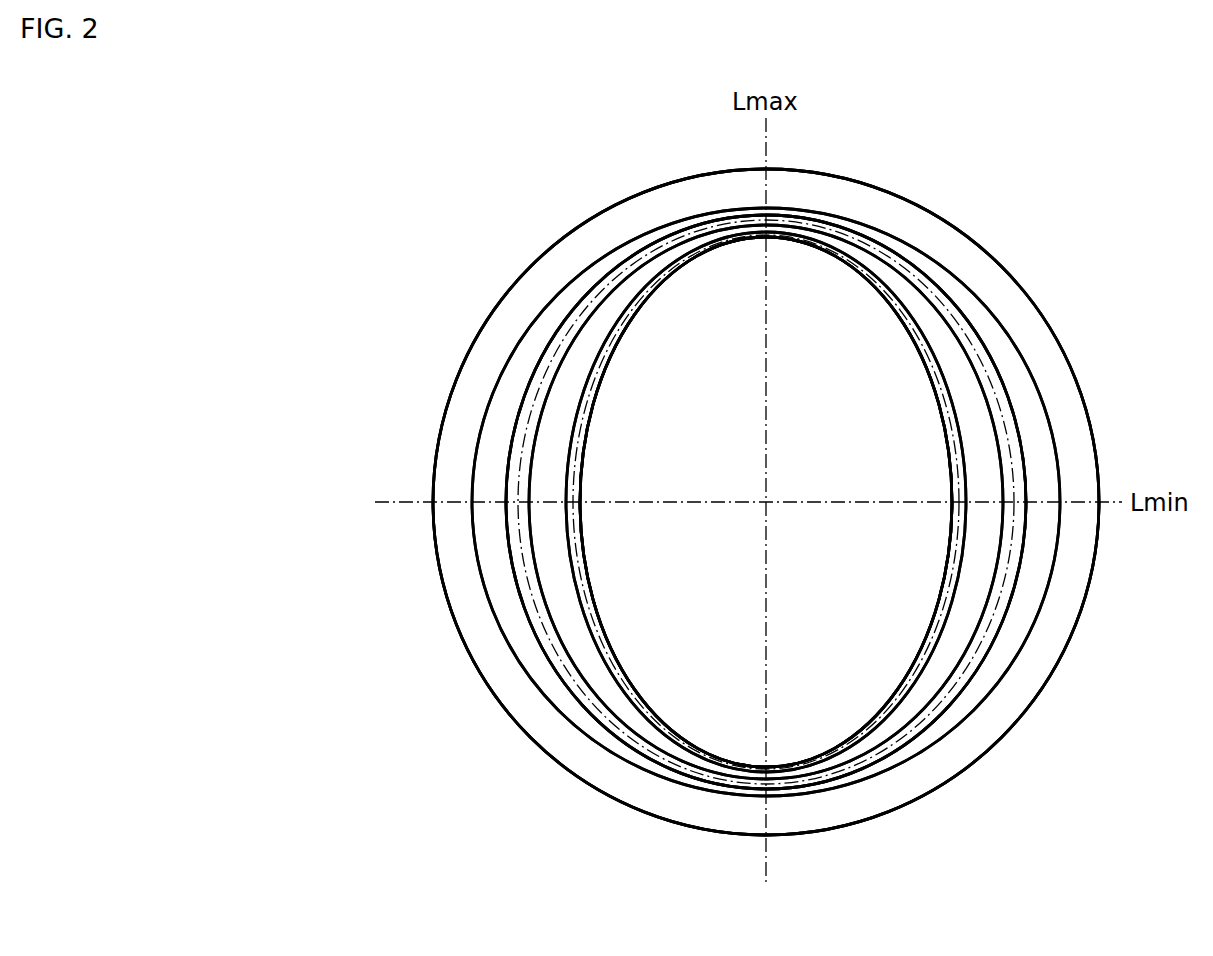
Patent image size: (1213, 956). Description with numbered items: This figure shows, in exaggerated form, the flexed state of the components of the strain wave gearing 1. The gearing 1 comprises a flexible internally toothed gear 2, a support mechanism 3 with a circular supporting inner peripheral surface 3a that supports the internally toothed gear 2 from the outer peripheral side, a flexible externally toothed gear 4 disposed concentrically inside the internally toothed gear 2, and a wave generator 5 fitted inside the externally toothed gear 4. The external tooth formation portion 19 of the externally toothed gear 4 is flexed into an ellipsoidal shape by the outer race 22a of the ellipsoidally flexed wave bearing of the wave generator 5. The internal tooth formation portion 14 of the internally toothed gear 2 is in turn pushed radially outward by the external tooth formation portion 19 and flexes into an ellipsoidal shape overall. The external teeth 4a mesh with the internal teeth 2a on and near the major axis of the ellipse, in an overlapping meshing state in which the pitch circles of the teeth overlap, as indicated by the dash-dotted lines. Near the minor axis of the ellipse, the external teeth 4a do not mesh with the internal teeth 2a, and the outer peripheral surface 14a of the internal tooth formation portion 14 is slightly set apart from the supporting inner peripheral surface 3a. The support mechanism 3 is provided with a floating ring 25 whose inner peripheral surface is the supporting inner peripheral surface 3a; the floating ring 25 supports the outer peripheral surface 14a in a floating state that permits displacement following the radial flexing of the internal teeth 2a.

The strain wave gearing 1 is at (983, 200).
The internally toothed gear 2 is at (992, 329).
The internal teeth 2a is at (524, 565).
The support mechanism 3 is at (1002, 254).
The supporting inner peripheral surface 3a is at (473, 463).
The externally toothed gear 4 is at (973, 413).
The external teeth 4a is at (574, 600).
The wave generator 5 is at (919, 542).
The internal tooth formation portion 14 is at (511, 542).
The outer peripheral surface of the internal tooth formation portion 14a is at (505, 497).
The external tooth formation portion 19 is at (594, 625).
The outer race 22a is at (597, 637).
The floating ring 25 is at (452, 383).